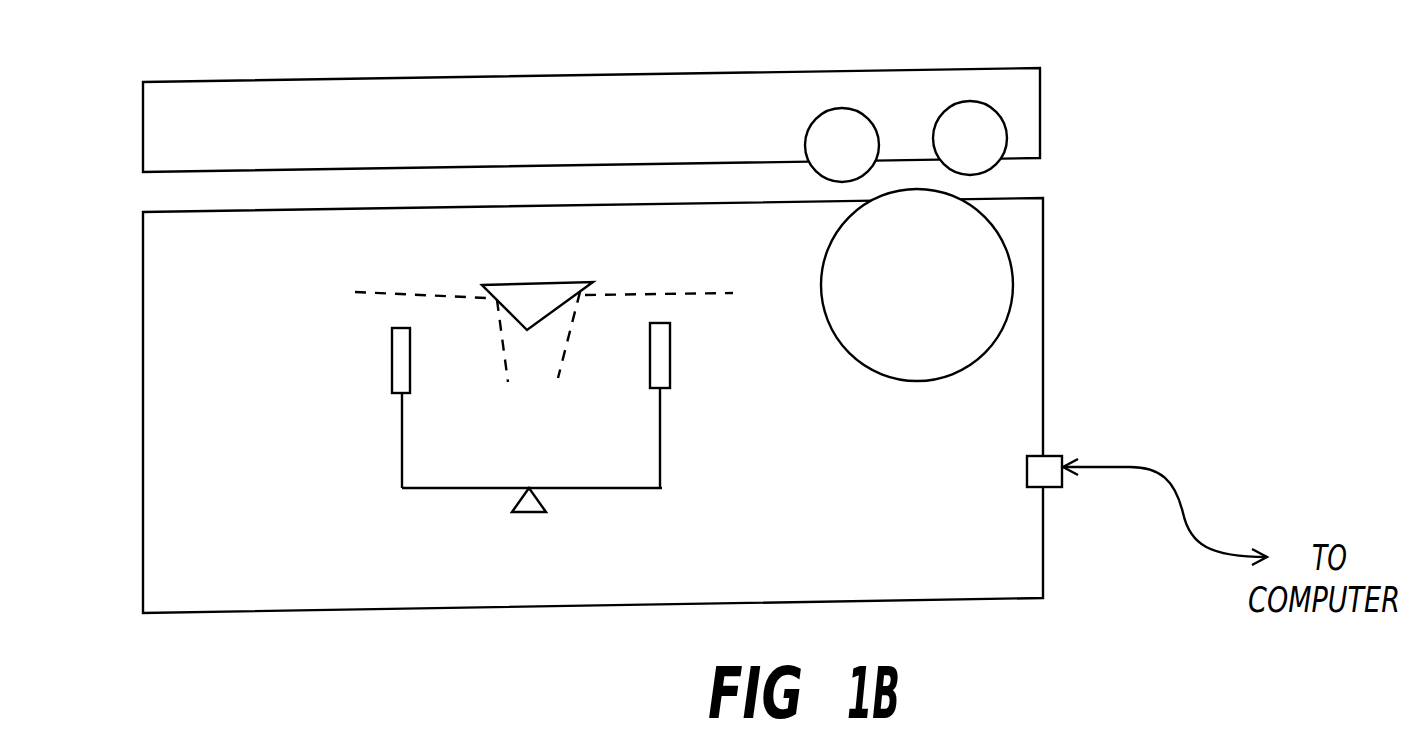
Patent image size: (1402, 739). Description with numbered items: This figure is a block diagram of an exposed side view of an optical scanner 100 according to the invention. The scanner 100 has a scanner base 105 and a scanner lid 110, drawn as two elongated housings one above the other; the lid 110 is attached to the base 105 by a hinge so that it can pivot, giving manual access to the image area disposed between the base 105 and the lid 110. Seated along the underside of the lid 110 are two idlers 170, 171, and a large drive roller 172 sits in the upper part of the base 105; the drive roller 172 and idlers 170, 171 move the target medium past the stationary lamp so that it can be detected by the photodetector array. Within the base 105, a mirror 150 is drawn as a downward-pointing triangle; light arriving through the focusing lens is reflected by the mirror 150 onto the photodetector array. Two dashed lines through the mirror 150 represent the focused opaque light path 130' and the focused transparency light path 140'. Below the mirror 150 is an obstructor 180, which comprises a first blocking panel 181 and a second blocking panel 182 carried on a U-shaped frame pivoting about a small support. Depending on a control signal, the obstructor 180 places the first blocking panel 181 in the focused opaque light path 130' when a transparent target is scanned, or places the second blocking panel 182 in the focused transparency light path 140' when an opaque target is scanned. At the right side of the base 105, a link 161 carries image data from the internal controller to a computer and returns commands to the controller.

The scanner 100 is at (218, 578).
The scanner base 105 is at (143, 430).
The scanner lid 110 is at (343, 78).
The focused opaque light path 130' is at (421, 260).
The focused transparency light path 140' is at (659, 258).
The mirror 150 is at (513, 284).
The link 161 is at (1133, 467).
The idler 170 is at (810, 122).
The idler 171 is at (983, 103).
The drive roller 172 is at (918, 381).
The obstructor 180 is at (537, 498).
The first blocking panel 181 is at (392, 352).
The second blocking panel 182 is at (670, 347).